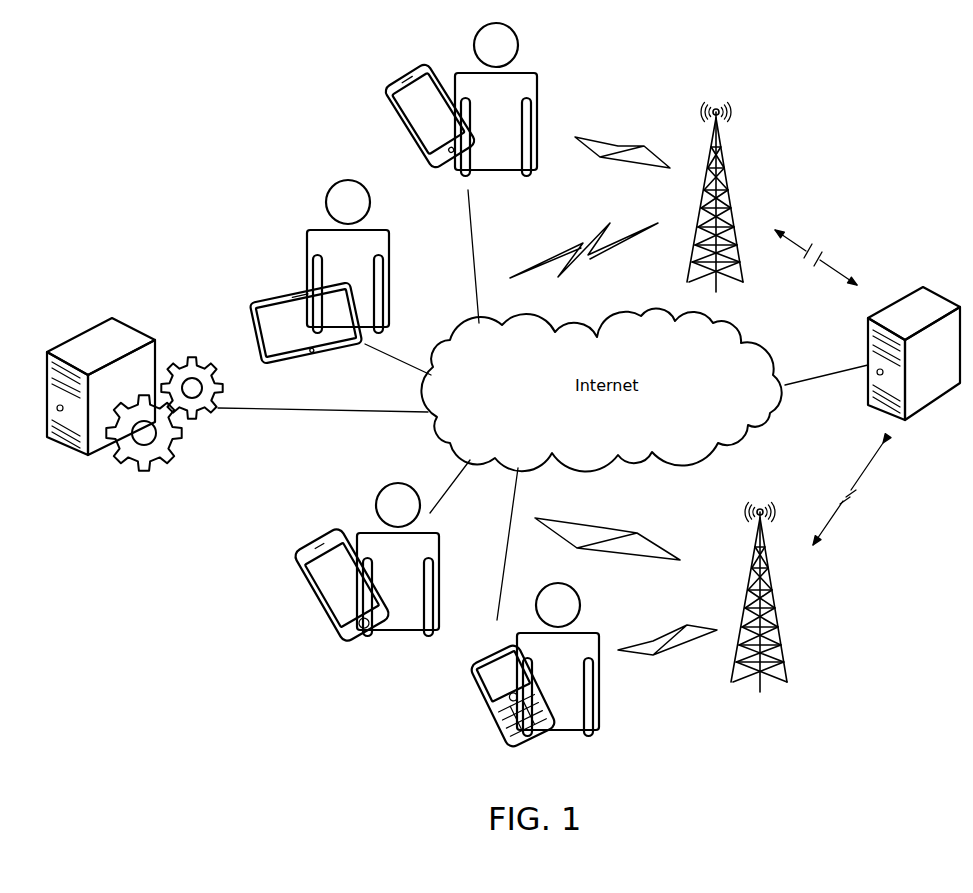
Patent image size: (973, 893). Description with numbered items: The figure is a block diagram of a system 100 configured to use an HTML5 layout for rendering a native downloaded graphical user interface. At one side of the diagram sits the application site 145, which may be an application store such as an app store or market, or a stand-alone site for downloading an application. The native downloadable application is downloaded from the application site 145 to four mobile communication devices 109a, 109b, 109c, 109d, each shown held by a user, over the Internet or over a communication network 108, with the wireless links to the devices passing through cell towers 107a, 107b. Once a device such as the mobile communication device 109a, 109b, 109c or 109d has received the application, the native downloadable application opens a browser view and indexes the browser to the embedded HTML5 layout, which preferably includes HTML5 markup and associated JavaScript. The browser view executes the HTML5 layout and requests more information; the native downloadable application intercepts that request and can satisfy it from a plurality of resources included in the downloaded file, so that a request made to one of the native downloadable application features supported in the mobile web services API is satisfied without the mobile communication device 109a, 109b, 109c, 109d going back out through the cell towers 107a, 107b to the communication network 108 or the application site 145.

The system 100 is at (173, 143).
The cell tower 107a is at (745, 268).
The cell tower 107b is at (787, 670).
The communication network 108 is at (922, 408).
The mobile communication device 109a is at (303, 257).
The mobile communication device 109b is at (426, 62).
The mobile communication device 109c is at (467, 700).
The mobile communication device 109d is at (313, 607).
The application site 145 is at (101, 330).